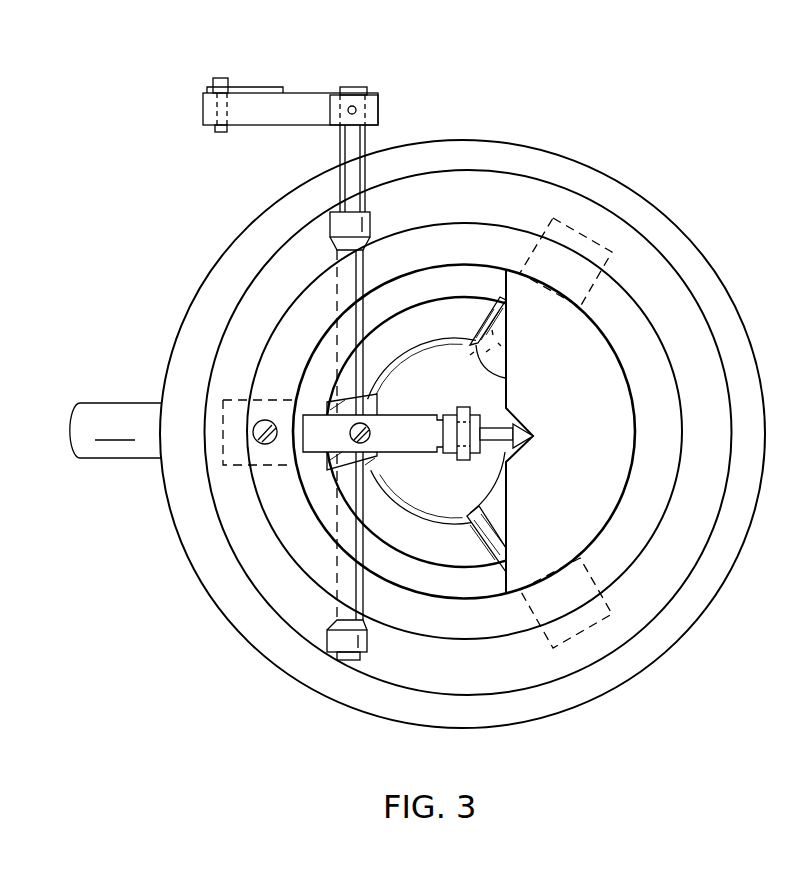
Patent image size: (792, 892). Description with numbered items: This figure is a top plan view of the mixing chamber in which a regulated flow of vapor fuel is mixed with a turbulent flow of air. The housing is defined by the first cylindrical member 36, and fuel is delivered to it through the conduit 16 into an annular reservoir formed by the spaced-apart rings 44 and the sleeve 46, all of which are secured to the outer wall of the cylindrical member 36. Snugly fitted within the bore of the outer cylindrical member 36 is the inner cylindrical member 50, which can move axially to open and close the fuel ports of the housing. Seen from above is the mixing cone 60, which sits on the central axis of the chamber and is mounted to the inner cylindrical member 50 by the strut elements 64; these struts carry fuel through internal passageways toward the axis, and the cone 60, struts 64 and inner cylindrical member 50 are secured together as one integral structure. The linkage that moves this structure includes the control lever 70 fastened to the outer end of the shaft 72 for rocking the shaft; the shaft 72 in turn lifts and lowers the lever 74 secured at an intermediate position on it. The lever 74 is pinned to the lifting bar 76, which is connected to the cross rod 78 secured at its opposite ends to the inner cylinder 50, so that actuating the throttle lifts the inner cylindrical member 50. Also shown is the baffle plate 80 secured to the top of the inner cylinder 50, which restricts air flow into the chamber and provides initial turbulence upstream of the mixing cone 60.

The conduit 16 is at (127, 412).
The first cylindrical member 36 is at (613, 297).
The rings 44 is at (230, 314).
The sleeve 46 is at (213, 263).
The inner cylindrical member 50 is at (387, 300).
The mixing cone 60 is at (448, 490).
The strut elements 64 is at (488, 332).
The control lever 70 is at (257, 117).
The shaft 72 is at (316, 320).
The lever 74 is at (413, 426).
The lifting bar 76 is at (447, 455).
The cross rod 78 is at (528, 422).
The baffle plate 80 is at (556, 391).